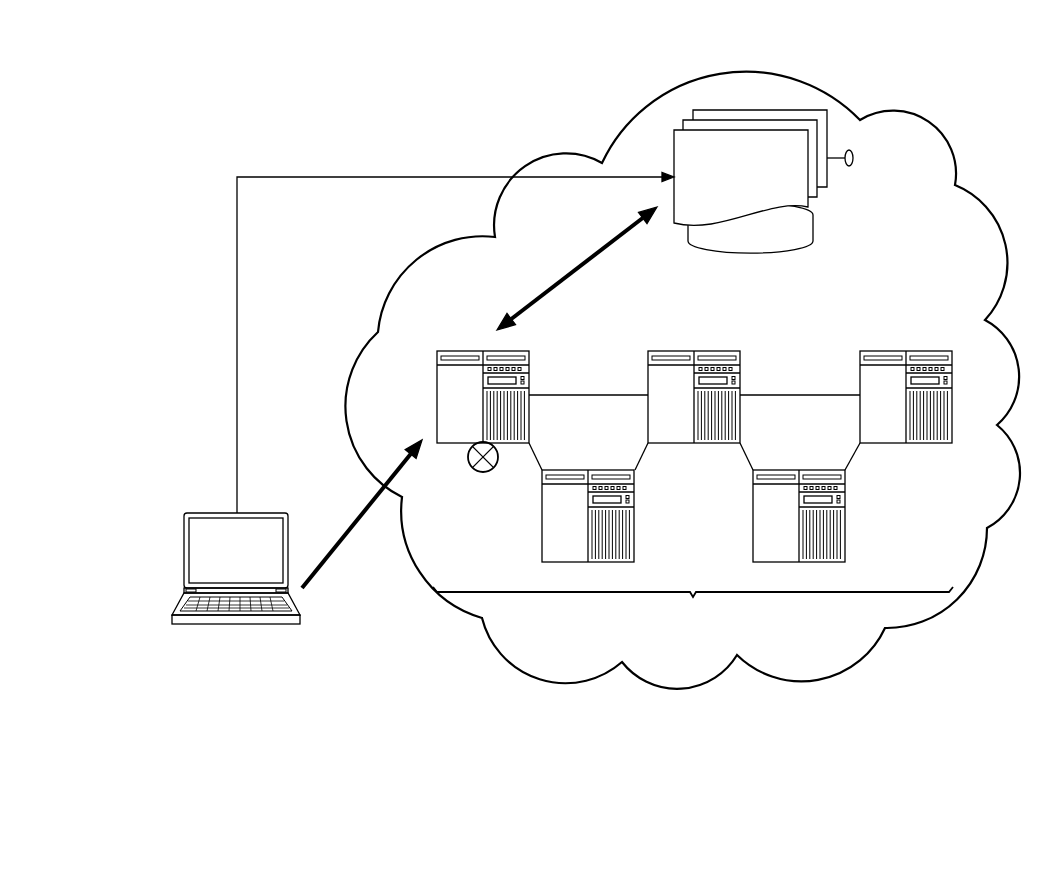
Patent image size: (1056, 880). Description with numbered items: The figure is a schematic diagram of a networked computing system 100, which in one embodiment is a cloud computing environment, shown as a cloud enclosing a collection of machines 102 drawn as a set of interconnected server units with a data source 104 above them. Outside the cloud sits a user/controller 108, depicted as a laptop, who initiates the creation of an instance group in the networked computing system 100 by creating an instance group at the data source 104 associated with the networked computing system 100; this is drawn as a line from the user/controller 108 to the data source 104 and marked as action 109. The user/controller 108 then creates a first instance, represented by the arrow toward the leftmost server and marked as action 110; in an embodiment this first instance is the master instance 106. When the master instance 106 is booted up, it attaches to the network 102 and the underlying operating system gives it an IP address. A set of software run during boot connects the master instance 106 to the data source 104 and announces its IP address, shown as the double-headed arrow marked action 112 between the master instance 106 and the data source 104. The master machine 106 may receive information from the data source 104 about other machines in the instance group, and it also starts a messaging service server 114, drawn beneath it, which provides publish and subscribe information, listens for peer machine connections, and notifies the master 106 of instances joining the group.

The networked computing system 100 is at (390, 128).
The collection of machines 102 is at (664, 489).
The data source 104 is at (758, 178).
The master instance 106 is at (437, 390).
The user/controller 108 is at (223, 627).
The action of creating an instance group 109 is at (236, 392).
The action of creating a first instance 110 is at (346, 531).
The action of announcing IP address 112 is at (578, 268).
The messaging service server 114 is at (484, 473).